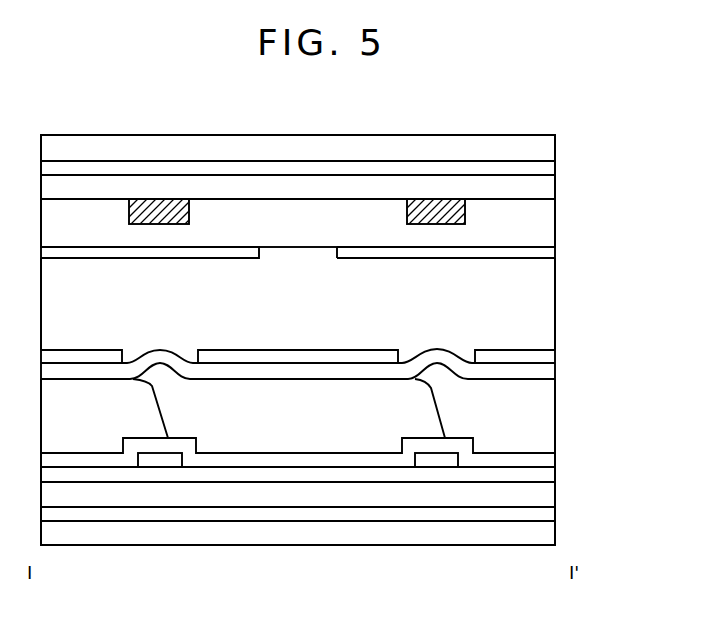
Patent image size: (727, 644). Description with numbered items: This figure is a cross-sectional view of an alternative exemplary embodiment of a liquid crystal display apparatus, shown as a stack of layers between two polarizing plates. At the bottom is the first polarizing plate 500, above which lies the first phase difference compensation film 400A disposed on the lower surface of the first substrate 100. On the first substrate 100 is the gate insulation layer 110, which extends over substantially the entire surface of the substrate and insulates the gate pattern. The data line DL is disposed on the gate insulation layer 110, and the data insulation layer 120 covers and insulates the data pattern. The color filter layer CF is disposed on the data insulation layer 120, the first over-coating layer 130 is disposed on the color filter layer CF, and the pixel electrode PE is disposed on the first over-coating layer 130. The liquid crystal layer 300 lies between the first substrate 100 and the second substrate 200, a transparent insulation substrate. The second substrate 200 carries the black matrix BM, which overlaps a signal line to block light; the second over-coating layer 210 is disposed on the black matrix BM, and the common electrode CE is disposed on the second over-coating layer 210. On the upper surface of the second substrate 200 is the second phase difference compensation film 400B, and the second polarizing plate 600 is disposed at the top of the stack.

The second polarizing plate 600 is at (551, 140).
The second phase difference compensation film 400B is at (551, 163).
The second substrate 200 is at (551, 185).
The black matrix BM is at (465, 206).
The second over-coating layer 210 is at (551, 232).
The common electrode CE is at (551, 253).
The liquid crystal layer 300 is at (551, 298).
The pixel electrode PE is at (551, 353).
The first over-coating layer 130 is at (551, 372).
The color filter layer CF is at (551, 412).
The data insulation layer 120 is at (551, 456).
The data line DL is at (435, 462).
The gate insulation layer 110 is at (551, 474).
The first substrate 100 is at (551, 492).
The first phase difference compensation film 400A is at (551, 512).
The first polarizing plate 500 is at (551, 536).